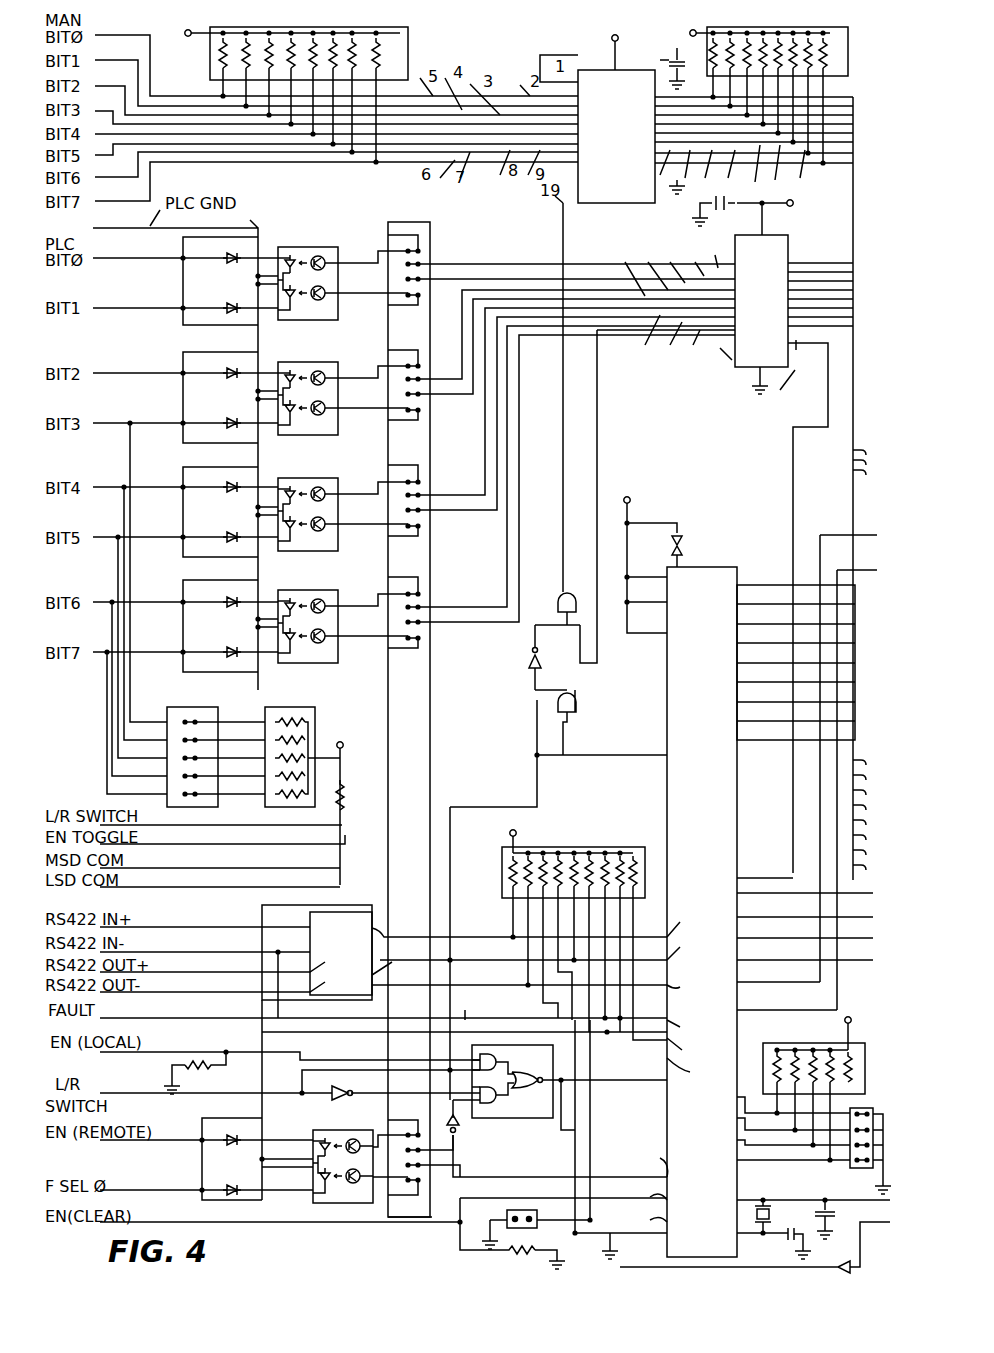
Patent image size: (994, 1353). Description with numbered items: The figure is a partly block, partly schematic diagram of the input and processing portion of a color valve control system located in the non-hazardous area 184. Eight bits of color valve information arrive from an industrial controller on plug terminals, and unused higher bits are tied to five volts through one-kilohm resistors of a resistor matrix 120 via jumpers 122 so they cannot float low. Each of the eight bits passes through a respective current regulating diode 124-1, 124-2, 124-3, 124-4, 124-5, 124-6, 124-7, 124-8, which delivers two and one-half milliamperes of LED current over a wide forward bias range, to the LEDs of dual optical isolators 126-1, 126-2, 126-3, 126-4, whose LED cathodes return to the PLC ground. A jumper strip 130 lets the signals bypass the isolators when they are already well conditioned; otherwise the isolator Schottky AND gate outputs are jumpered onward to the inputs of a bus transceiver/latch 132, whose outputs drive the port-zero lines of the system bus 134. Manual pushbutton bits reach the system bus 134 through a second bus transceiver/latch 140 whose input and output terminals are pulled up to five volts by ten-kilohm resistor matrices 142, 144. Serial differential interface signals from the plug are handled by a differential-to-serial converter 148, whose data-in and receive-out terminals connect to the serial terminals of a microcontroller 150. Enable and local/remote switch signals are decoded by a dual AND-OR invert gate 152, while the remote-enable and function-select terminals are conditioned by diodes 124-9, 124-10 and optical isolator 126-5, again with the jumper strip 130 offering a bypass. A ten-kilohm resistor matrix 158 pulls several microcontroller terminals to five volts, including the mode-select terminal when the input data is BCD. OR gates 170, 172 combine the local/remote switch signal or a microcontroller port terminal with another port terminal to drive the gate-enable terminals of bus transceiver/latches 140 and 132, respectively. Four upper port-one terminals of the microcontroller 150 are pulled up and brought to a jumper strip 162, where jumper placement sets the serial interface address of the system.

The resistor matrix 142 is at (428, 48).
The bus transceiver/latch 140 is at (521, 75).
The resistor matrix 144 is at (703, 16).
The system bus 134 is at (845, 243).
The bus transceiver/latch 132 is at (724, 384).
The jumper strip 130 is at (450, 225).
The optical isolator 126-1 is at (316, 234).
The optical isolator 126-2 is at (318, 370).
The optical isolator 126-3 is at (324, 486).
The optical isolator 126-4 is at (324, 600).
The optical isolator 126-5 is at (337, 1217).
The current regulating diode 124-1 is at (226, 267).
The current regulating diode 124-2 is at (232, 297).
The current regulating diode 124-3 is at (226, 382).
The current regulating diode 124-4 is at (232, 412).
The current regulating diode 124-5 is at (218, 497).
The current regulating diode 124-6 is at (220, 520).
The current regulating diode 124-7 is at (218, 612).
The current regulating diode 124-8 is at (220, 636).
The current regulating diode 124-9 is at (224, 1152).
The diode 124-10 is at (232, 1184).
The jumpers 122 is at (182, 700).
The resistor matrix 120 is at (257, 702).
The differential-to-serial/serial-to-differential converter 148 is at (378, 910).
The dual AND-OR invert gate 152 is at (543, 1158).
The OR gate 170 is at (553, 579).
The OR gate 172 is at (585, 692).
The microcontroller 150 is at (735, 559).
The resistor matrix 158 is at (589, 839).
The non-hazardous area 184 is at (383, 1144).
The jumper strip 162 is at (848, 1180).